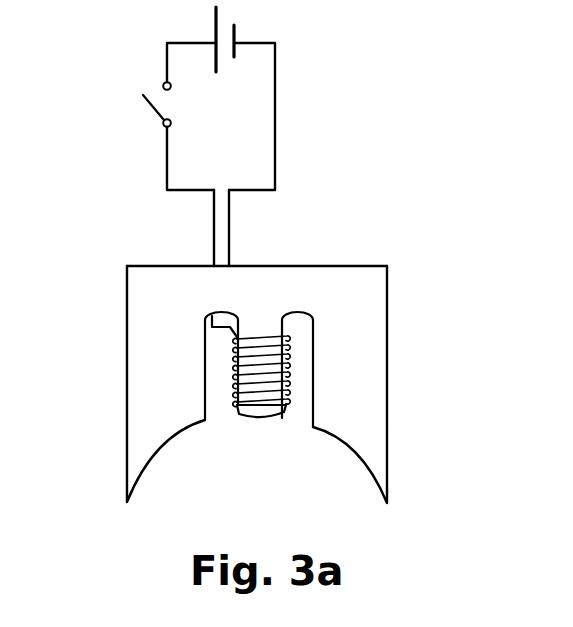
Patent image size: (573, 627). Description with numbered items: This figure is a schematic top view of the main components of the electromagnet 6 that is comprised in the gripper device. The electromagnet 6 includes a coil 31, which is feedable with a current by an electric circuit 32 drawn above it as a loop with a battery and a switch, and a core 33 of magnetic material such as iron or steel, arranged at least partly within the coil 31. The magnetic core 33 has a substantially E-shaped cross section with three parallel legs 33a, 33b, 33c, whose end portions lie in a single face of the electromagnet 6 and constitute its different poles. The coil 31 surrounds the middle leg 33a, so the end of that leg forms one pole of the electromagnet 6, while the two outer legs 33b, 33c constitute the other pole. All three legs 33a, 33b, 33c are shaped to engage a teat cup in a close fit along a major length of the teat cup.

The electromagnet 6 is at (415, 312).
The coil 31 is at (288, 412).
The electric circuit 32 is at (276, 97).
The magnetic core 33 is at (325, 264).
The middle leg 33a is at (258, 415).
The leg 33b is at (127, 372).
The leg 33c is at (388, 360).